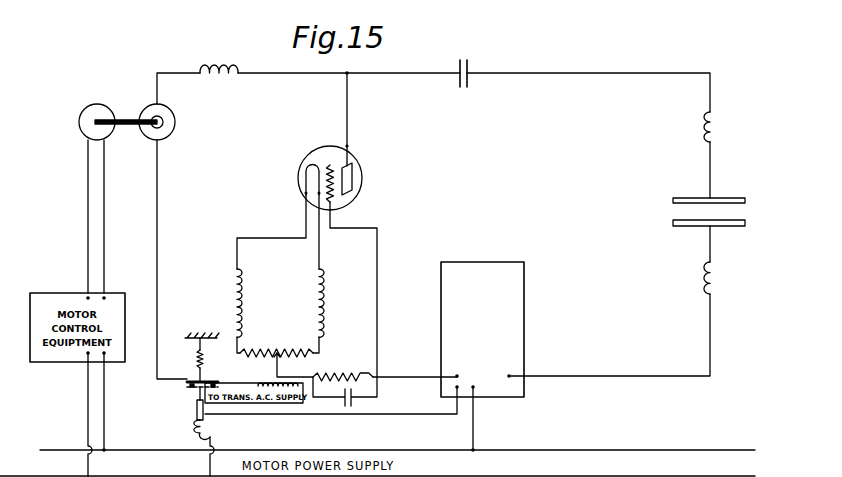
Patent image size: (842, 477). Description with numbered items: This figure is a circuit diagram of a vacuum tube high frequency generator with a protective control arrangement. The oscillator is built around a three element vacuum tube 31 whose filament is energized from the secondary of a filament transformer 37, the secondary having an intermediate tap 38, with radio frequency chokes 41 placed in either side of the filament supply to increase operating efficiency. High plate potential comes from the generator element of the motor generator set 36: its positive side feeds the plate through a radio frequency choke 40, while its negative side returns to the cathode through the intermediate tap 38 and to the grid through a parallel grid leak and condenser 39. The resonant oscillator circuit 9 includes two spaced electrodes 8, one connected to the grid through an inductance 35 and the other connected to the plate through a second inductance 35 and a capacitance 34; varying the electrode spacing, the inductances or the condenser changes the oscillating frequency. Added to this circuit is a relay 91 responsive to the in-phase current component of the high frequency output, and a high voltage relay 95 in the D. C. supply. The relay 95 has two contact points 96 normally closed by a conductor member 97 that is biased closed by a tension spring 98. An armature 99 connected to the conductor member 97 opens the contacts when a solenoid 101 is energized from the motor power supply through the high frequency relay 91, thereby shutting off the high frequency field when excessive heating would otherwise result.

The spaced electrodes 8 is at (673, 222).
The high frequency circuit 9 is at (545, 183).
The three element vacuum tube 31 is at (362, 172).
The capacitance 34 is at (470, 70).
The inductances 35 is at (703, 271).
The motor generator set 36 is at (127, 118).
The filament transformer 37 is at (207, 366).
The intermediate tap 38 is at (314, 352).
The parallel grid leak and condenser 39 is at (343, 387).
The radio frequency choke 40 is at (222, 80).
The radio frequency chokes 41 is at (314, 292).
The high frequency current responsive relay 91 is at (524, 310).
The high voltage relay 95 is at (150, 386).
The contact points 96 is at (216, 381).
The conductor member 97 is at (187, 383).
The tension spring 98 is at (197, 355).
The armature 99 is at (197, 409).
The solenoid 101 is at (194, 427).